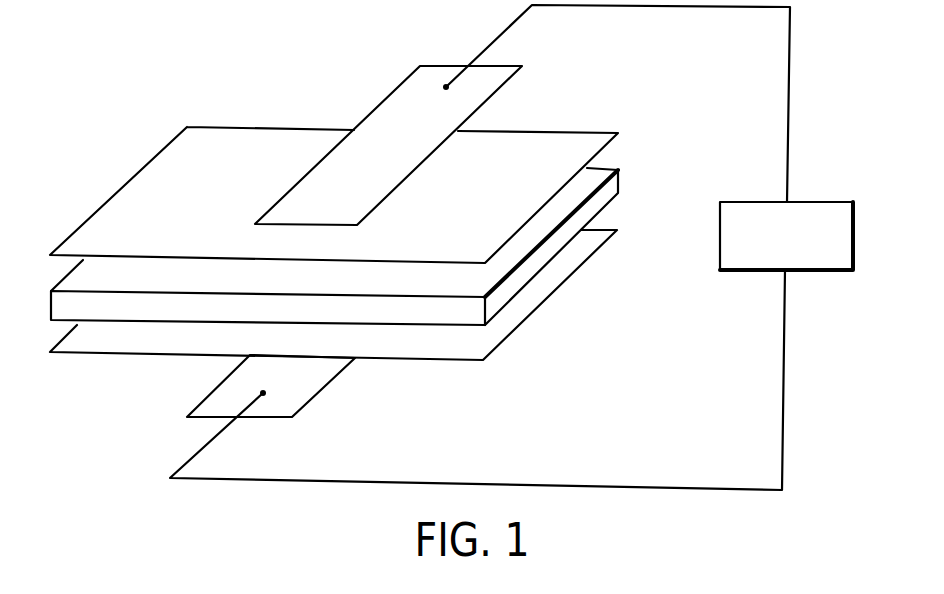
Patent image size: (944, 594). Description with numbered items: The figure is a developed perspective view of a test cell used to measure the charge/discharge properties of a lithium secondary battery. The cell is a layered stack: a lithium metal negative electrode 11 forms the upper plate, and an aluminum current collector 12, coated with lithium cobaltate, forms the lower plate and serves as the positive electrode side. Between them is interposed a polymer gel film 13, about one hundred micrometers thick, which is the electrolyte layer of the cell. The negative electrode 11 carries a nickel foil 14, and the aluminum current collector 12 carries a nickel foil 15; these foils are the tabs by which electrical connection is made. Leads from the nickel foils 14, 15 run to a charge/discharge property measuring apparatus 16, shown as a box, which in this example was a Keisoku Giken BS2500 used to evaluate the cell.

The negative electrode 11 is at (567, 135).
The aluminum current collector 12 is at (532, 300).
The polymer gel film 13 is at (613, 184).
The nickel foil 14 is at (404, 88).
The nickel foil 15 is at (213, 407).
The charge/discharge property measuring apparatus 16 is at (850, 233).